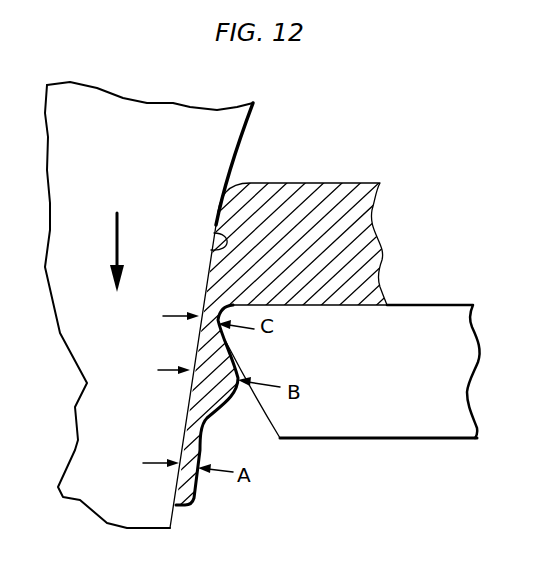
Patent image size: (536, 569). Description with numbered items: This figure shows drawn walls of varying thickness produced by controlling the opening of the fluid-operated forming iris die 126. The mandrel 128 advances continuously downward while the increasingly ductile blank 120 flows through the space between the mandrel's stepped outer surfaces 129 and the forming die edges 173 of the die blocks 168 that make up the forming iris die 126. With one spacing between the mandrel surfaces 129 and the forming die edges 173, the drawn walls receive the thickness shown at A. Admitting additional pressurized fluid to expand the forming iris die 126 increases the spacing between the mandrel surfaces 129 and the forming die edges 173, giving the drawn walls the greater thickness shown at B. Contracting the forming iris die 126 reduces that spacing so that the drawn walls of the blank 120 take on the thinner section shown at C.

The blank 120 is at (338, 182).
The forming iris die 126 is at (447, 303).
The mandrel 128 is at (190, 173).
The outer surfaces 129 is at (214, 234).
The die blocks 168 is at (428, 377).
The forming die edges 173 is at (216, 310).